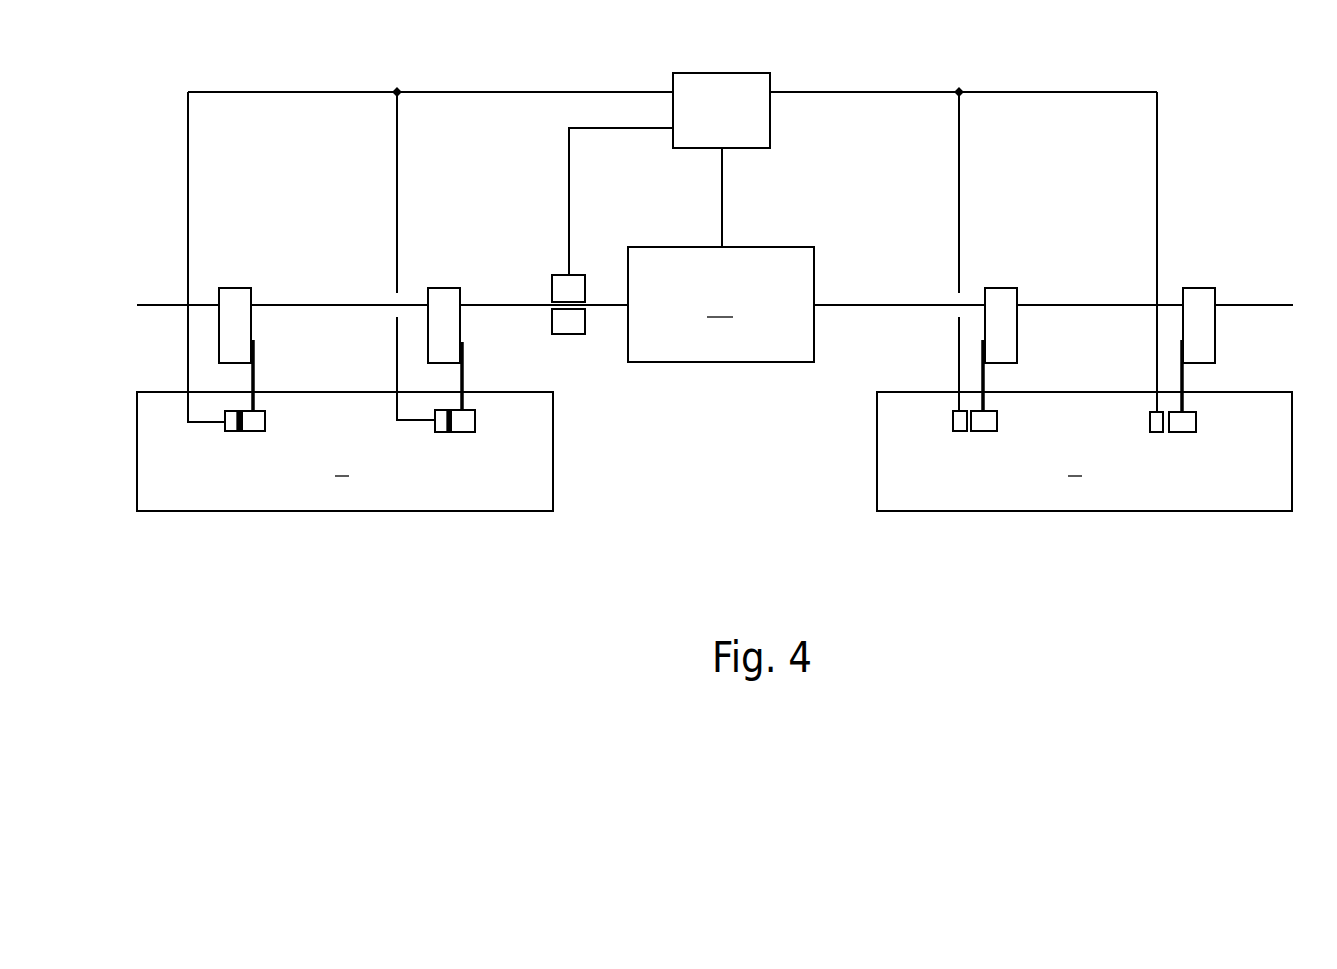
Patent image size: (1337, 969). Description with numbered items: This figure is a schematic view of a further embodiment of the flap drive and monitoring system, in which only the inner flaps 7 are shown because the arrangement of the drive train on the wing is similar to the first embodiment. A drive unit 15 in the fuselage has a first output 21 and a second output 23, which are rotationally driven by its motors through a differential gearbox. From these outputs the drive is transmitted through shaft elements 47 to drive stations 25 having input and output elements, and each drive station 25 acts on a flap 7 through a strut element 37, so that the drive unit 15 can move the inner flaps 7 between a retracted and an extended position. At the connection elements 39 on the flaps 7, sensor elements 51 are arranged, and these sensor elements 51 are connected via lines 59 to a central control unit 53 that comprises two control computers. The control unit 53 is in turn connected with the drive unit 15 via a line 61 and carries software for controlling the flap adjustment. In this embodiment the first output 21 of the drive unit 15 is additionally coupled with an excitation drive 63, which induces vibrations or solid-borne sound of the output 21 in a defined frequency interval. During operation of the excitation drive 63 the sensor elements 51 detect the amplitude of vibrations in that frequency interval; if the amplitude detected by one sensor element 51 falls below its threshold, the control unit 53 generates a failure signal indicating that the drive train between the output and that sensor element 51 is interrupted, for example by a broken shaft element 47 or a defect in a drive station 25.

The inner flap 7 is at (714, 451).
The drive unit 15 is at (721, 304).
The first output 21 is at (612, 307).
The second output 23 is at (817, 308).
The drive station 25 is at (235, 288).
The strut element 37 is at (255, 370).
The connection element 39 is at (250, 431).
The shaft element 47 is at (495, 305).
The sensor element 51 is at (232, 431).
The central control unit 53 is at (721, 110).
The lines 59 is at (858, 92).
The line 61 is at (724, 180).
The excitation drive 63 is at (577, 275).